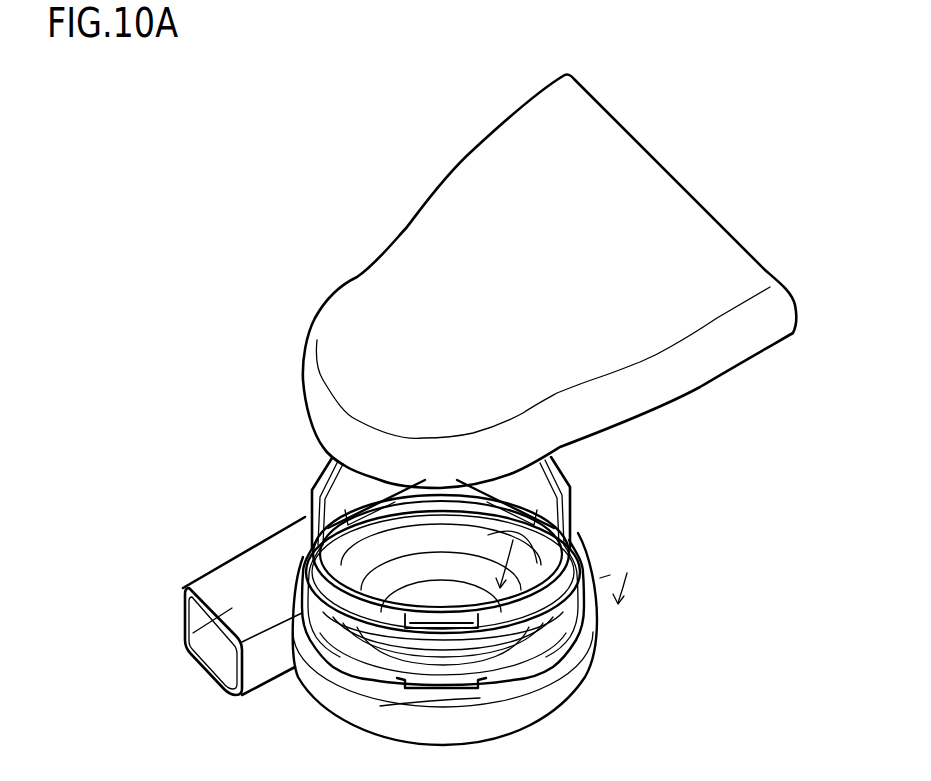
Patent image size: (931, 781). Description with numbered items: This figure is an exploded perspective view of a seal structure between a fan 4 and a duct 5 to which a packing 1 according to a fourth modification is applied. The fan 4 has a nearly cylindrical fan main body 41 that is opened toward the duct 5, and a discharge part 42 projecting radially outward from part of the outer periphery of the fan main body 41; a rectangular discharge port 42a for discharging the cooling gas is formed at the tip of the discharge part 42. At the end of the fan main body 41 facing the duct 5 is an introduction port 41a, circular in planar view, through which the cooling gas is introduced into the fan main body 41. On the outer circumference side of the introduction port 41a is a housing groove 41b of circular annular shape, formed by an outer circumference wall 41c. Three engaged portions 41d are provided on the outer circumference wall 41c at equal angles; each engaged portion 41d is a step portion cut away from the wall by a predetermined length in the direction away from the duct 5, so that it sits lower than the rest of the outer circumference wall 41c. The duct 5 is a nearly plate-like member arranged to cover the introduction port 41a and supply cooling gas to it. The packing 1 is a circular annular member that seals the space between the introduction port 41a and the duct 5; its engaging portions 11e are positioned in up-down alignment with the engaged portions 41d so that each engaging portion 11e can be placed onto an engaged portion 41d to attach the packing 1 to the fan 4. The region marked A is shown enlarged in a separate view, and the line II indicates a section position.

The packing 1 is at (568, 463).
The fan 4 is at (603, 630).
The duct 5 is at (699, 396).
The fan main body 41 is at (563, 678).
The introduction port 41a is at (581, 550).
The housing groove 41b is at (523, 650).
The outer circumference wall 41c is at (503, 700).
The engaged portion 41d is at (333, 517).
The discharge part 42 is at (230, 577).
The discharge port 42a is at (233, 675).
The engaging portion 11e is at (330, 460).
The section line II is at (562, 570).
The part A is at (468, 710).